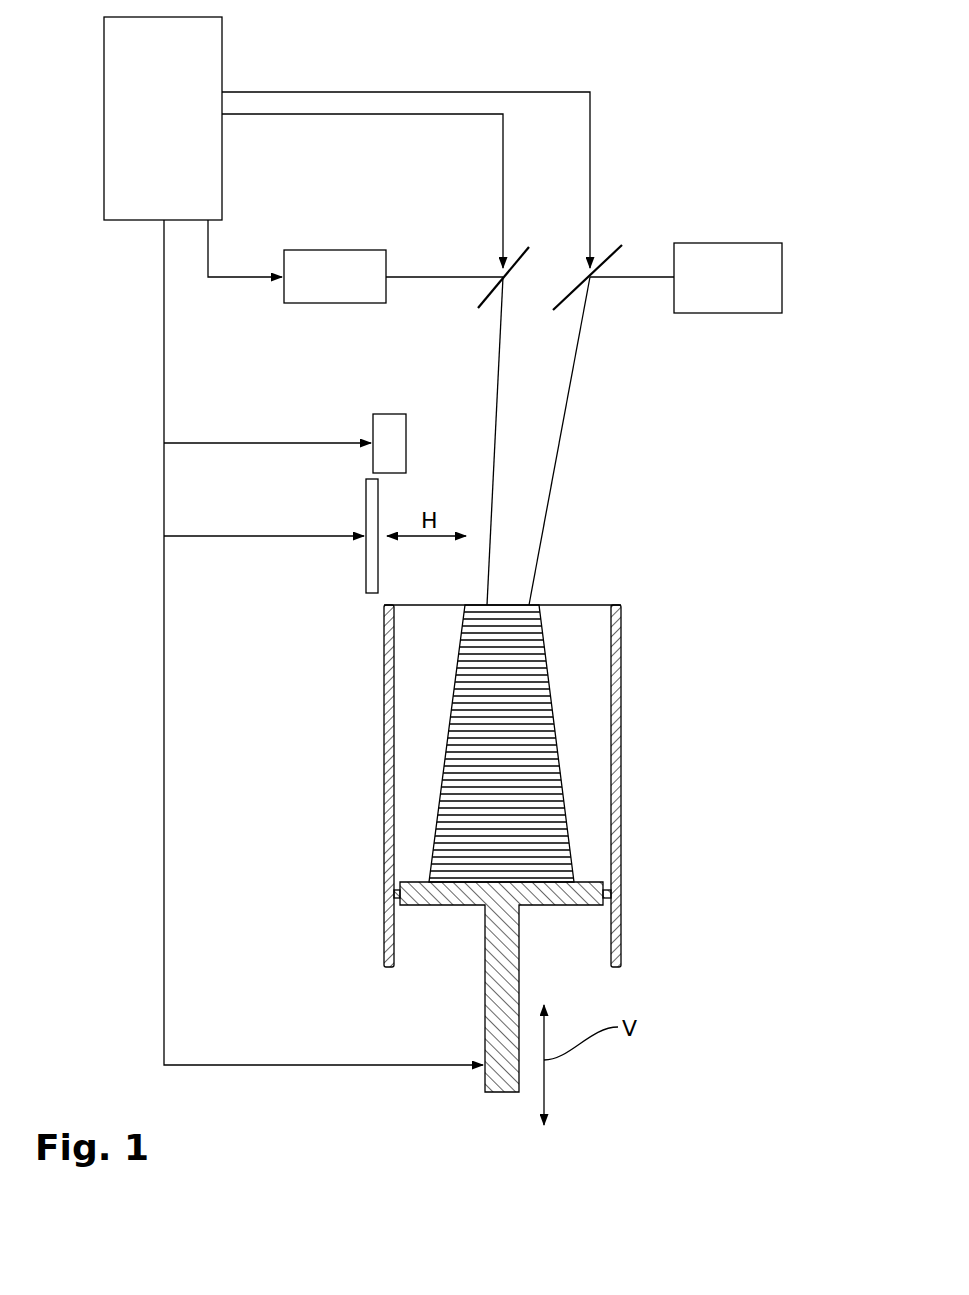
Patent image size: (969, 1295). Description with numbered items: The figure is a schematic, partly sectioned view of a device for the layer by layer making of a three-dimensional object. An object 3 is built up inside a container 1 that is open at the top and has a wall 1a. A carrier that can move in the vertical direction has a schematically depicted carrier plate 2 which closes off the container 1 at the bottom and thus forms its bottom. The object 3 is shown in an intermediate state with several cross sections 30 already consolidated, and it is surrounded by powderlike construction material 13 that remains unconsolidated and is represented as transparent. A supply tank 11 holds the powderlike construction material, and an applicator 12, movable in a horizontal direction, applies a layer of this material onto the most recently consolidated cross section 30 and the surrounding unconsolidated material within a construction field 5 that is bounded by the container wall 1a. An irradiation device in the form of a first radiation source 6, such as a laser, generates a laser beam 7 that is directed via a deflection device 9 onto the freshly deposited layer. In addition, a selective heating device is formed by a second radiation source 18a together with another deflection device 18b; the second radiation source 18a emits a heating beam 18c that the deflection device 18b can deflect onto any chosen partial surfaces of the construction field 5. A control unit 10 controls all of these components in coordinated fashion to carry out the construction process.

The control unit 10 is at (200, 67).
The second radiation source 18a is at (320, 258).
The deflection device 18b is at (480, 298).
The heating beam 18c is at (490, 397).
The deflection device 9 is at (609, 247).
The first radiation source 6 is at (720, 258).
The laser beam 7 is at (620, 280).
The supply tank 11 is at (406, 424).
The applicator 12 is at (366, 520).
The construction field 5 is at (552, 742).
The powderlike construction material 13 is at (594, 670).
The container wall 1a is at (615, 730).
The container 1 is at (552, 742).
The carrier plate 2 is at (587, 880).
The object 3 is at (438, 743).
The cross sections 30 is at (458, 636).